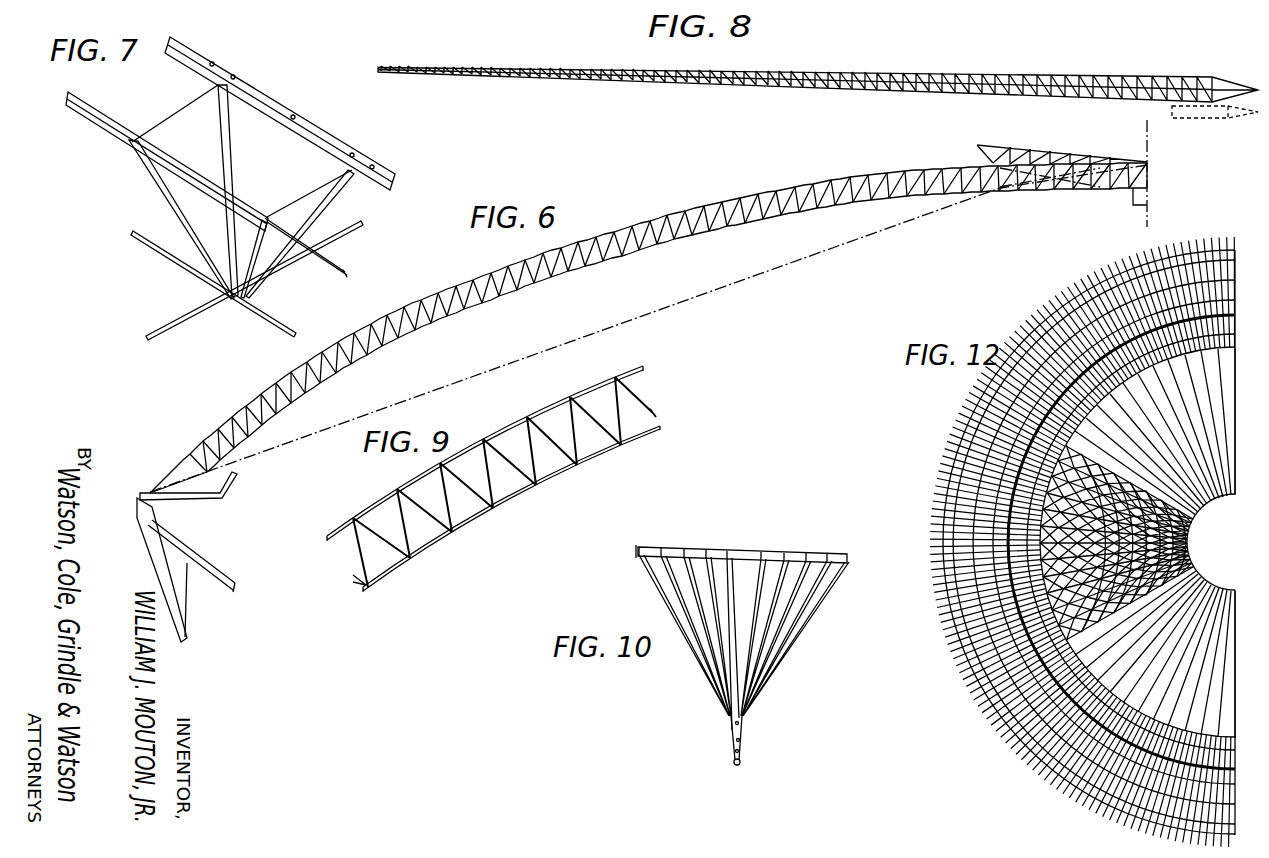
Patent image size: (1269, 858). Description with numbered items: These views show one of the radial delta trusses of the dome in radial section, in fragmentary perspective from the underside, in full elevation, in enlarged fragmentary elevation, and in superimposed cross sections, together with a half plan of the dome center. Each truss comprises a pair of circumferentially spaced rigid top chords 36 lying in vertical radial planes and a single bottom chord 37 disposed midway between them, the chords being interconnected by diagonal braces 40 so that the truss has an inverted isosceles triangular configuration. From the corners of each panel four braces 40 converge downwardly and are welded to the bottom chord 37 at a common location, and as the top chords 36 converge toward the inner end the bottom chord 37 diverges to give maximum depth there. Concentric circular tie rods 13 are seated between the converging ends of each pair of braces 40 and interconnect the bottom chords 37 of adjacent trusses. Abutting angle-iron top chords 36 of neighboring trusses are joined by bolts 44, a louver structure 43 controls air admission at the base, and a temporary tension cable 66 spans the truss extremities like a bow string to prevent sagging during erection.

In FIG. 7, the annular tie rod 13 is at (340, 238).
In FIG. 7, the top chord 36 is at (97, 120).
In FIG. 9, the top chord 36 is at (337, 538).
In FIG. 7, the bottom chord 37 is at (268, 325).
In FIG. 9, the bottom chord 37 is at (387, 578).
In FIG. 7, the diagonal brace 40 is at (160, 192).
In FIG. 9, the diagonal brace 40 is at (570, 400).
In FIG. 6, the louver structure 43 is at (198, 484).
In FIG. 7, the bolt 44 is at (233, 77).
In FIG. 6, the tension cable 66 is at (748, 266).